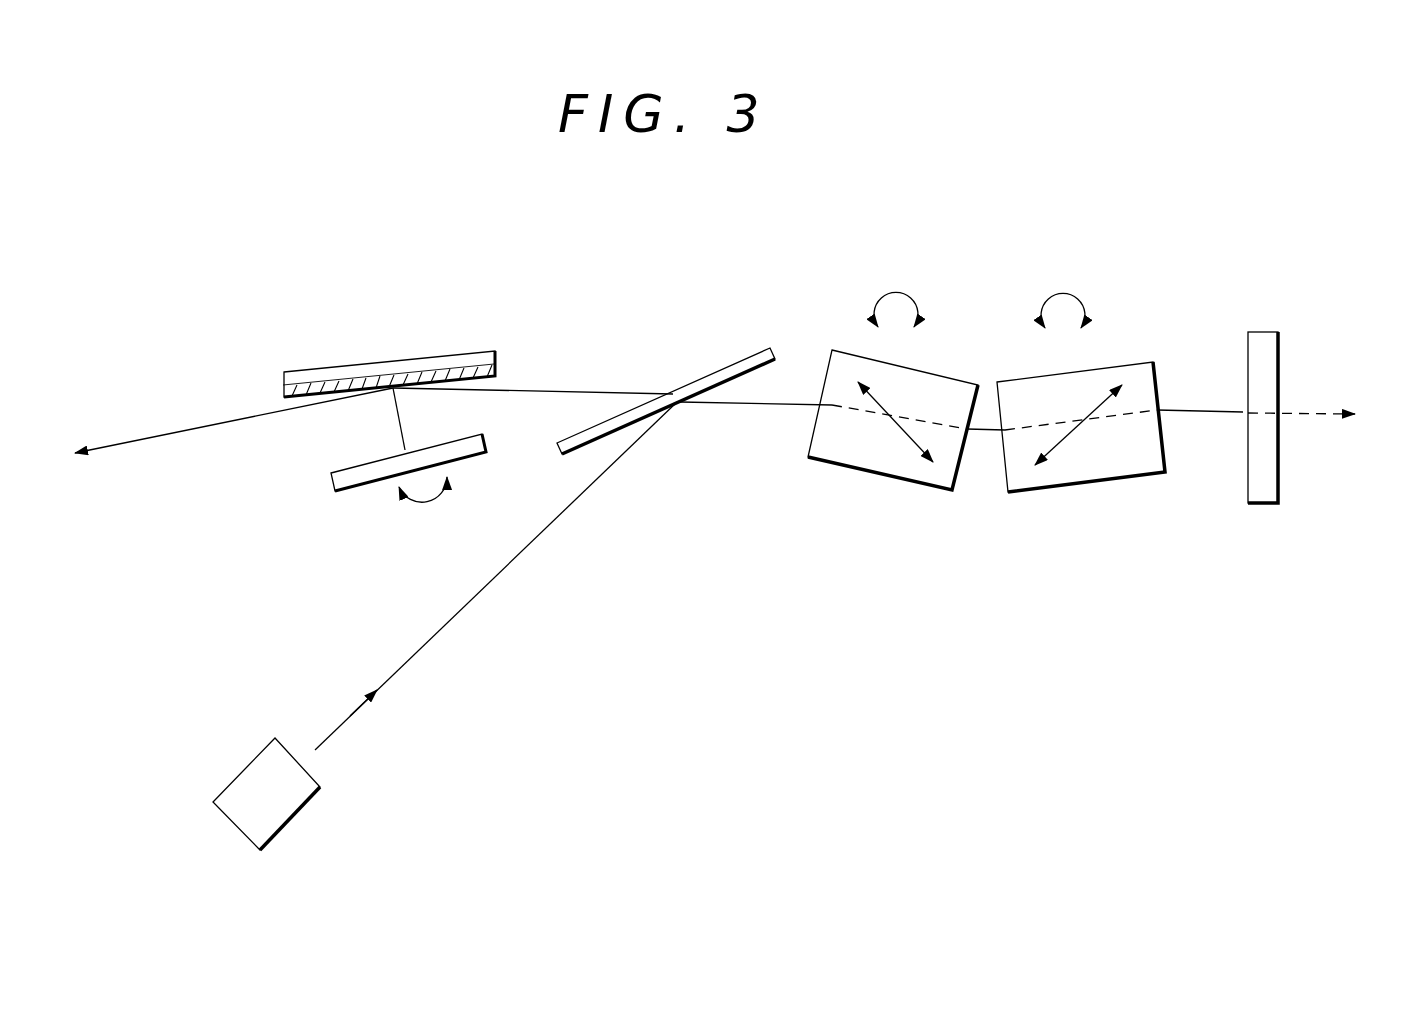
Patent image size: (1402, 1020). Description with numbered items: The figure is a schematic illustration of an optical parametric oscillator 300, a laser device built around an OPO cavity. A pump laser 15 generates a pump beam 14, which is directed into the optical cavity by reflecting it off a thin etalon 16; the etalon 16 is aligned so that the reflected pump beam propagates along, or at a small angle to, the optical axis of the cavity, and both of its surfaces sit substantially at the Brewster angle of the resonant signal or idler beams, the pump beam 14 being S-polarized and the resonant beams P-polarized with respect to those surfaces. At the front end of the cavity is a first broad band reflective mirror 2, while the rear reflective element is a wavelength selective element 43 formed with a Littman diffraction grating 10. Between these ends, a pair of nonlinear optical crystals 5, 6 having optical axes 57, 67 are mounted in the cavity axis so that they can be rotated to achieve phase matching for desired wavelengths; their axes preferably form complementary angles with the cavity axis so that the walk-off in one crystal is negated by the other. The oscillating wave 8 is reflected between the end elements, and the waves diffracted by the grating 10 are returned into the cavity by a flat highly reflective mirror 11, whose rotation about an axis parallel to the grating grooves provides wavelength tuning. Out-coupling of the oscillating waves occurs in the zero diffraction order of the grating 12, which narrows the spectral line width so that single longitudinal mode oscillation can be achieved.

The first broad band reflective mirror 2 is at (1268, 332).
The nonlinear optical crystal 5 is at (951, 493).
The nonlinear optical crystal 6 is at (1038, 492).
The oscillating wave 8 is at (1350, 420).
The Littman diffraction grating 10 is at (392, 362).
The flat highly reflective mirror 11 is at (343, 490).
The zero diffraction order of the grating 12 is at (203, 428).
The pump beam 14 is at (430, 643).
The pump laser 15 is at (285, 740).
The thin etalon 16 is at (765, 342).
The wavelength selective element 43 is at (483, 312).
The optical axis 57 is at (903, 433).
The optical axis 67 is at (1077, 433).
The optical parametric oscillator 300 is at (987, 295).